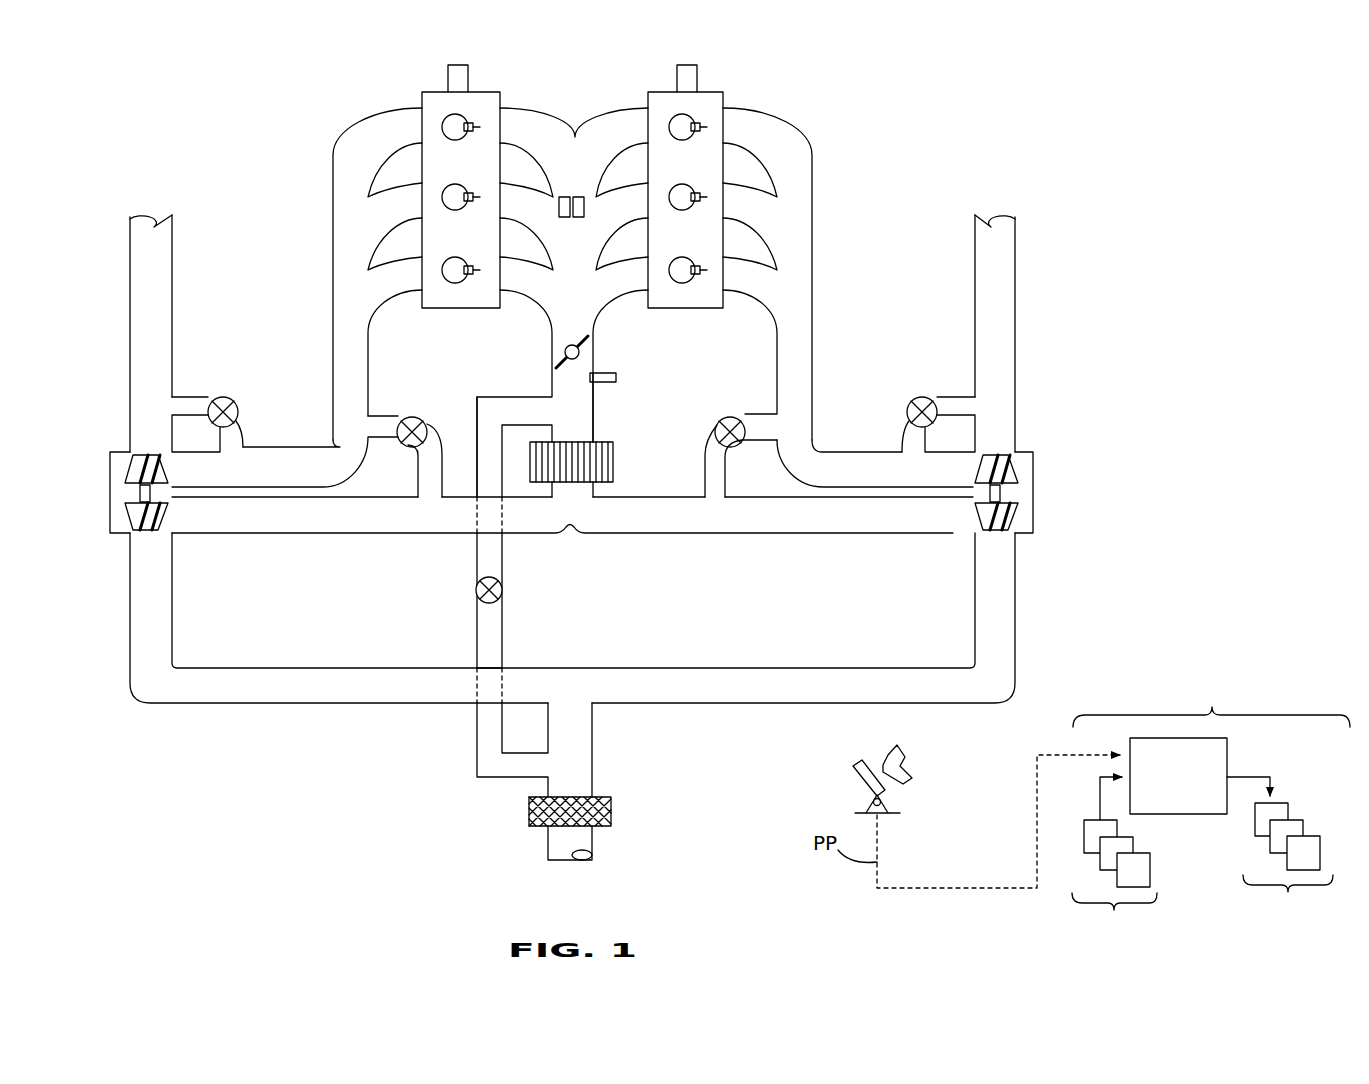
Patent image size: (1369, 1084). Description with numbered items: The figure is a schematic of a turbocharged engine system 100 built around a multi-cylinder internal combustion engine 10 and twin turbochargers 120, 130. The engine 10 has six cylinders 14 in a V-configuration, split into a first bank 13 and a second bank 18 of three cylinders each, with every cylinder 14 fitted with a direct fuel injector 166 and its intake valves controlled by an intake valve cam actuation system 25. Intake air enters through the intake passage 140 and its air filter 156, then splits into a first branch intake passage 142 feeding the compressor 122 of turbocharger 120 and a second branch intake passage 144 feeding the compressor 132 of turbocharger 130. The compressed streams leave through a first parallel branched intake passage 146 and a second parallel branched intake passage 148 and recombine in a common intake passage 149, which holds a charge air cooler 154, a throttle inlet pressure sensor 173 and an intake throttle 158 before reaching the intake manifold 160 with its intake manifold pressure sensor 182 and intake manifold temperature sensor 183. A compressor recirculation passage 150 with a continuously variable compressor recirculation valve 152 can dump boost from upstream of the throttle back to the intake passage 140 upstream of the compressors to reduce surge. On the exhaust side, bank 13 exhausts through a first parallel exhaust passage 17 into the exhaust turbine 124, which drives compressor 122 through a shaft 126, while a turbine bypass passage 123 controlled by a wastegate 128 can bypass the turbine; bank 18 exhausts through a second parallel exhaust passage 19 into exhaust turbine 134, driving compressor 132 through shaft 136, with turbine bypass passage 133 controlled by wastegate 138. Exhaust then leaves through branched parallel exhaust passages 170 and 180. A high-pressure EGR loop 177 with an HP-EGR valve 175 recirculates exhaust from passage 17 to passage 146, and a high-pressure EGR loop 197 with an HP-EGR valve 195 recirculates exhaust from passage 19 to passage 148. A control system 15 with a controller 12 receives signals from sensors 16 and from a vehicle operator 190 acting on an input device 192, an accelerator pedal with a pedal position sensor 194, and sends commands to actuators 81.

The internal combustion engine 10 is at (975, 96).
The turbocharged engine system 100 is at (1260, 92).
The controller 12 is at (1178, 776).
The first bank 13 is at (716, 96).
The cylinder 14 is at (683, 190).
The control system 15 is at (1211, 692).
The sensors 16 is at (1114, 866).
The first parallel exhaust passage 17 is at (812, 375).
The second bank 18 is at (424, 96).
The second parallel exhaust passage 19 is at (333, 368).
The intake valve cam actuation system 25 is at (460, 67).
The actuators 81 is at (1282, 856).
The turbocharger 120 is at (992, 438).
The compressor 122 is at (990, 522).
The turbine bypass passage 123 is at (935, 400).
The exhaust turbine 124 is at (1010, 458).
The shaft 126 is at (1003, 493).
The wastegate 128 is at (908, 402).
The turbocharger 130 is at (150, 438).
The compressor 132 is at (160, 522).
The turbine bypass passage 133 is at (210, 400).
The exhaust turbine 134 is at (135, 460).
The shaft 136 is at (140, 492).
The wastegate 138 is at (237, 402).
The intake passage 140 is at (548, 848).
The first branch intake passage 142 is at (775, 668).
The second branch intake passage 144 is at (320, 668).
The first parallel branched intake passage 146 is at (765, 537).
The second parallel branched intake passage 148 is at (290, 537).
The common intake passage 149 is at (594, 412).
The compressor recirculation passage 150 is at (476, 560).
The compressor recirculation valve 152 is at (502, 590).
The charge air cooler 154 is at (614, 466).
The air filter 156 is at (612, 812).
The intake throttle 158 is at (571, 345).
The intake manifold 160 is at (575, 126).
The fuel injector 166 is at (698, 196).
The branched parallel exhaust passage 170 is at (974, 272).
The throttle inlet pressure sensor 173 is at (615, 377).
The HP-EGR valve 175 is at (730, 418).
The high-pressure EGR loop 177 is at (716, 440).
The branched parallel exhaust passage 180 is at (173, 272).
The intake manifold pressure sensor 182 is at (561, 220).
The intake manifold temperature sensor 183 is at (584, 220).
The vehicle operator 190 is at (908, 765).
The input device 192 is at (858, 775).
The pedal position sensor 194 is at (886, 802).
The HP-EGR valve 195 is at (415, 418).
The high-pressure EGR loop 197 is at (398, 422).